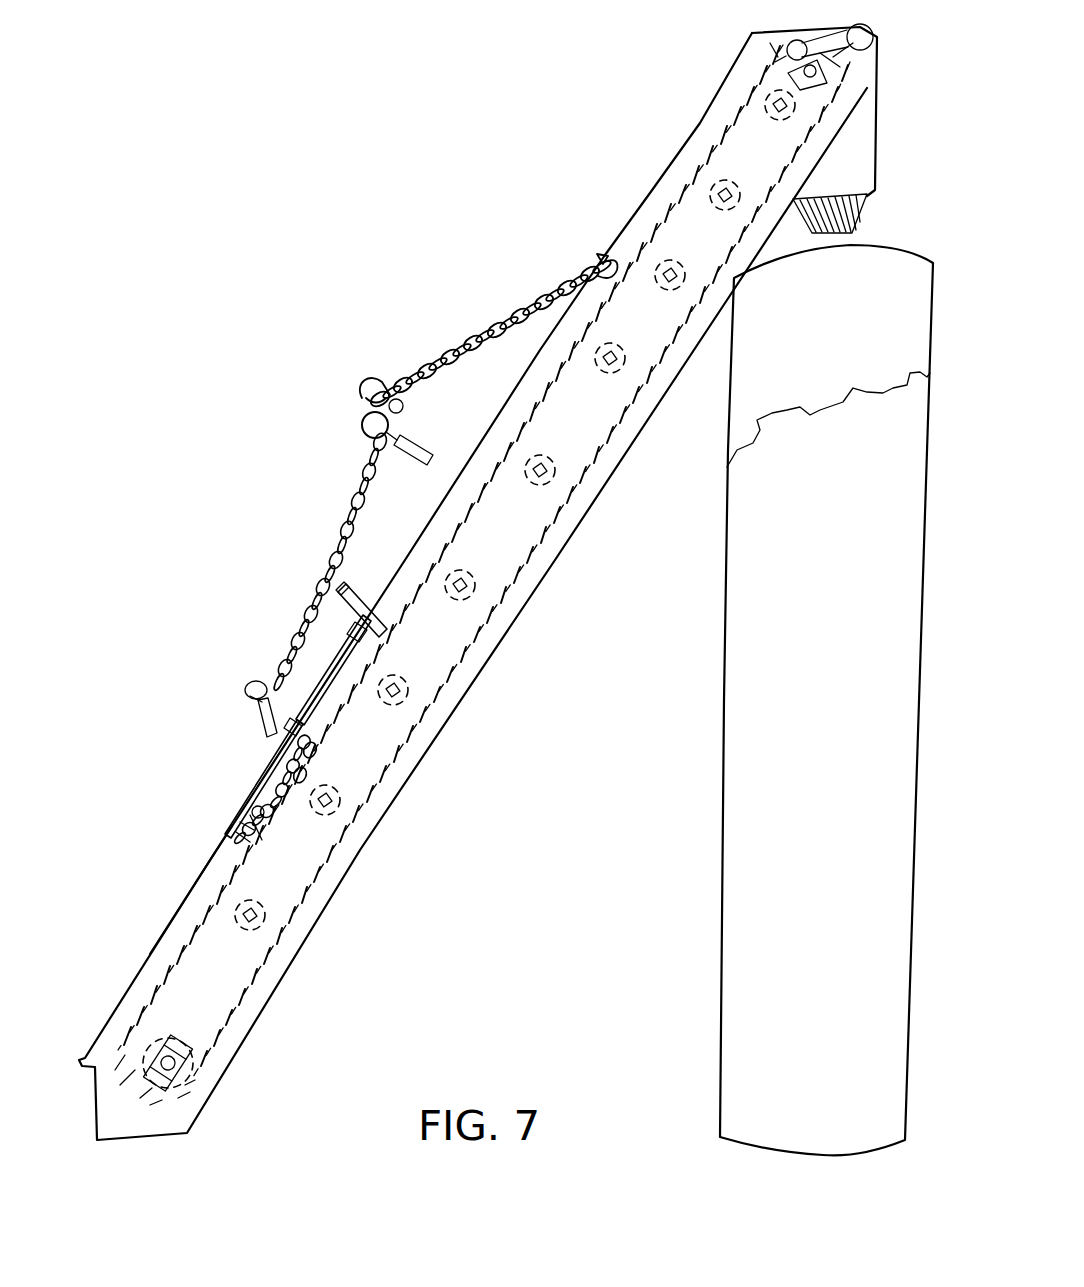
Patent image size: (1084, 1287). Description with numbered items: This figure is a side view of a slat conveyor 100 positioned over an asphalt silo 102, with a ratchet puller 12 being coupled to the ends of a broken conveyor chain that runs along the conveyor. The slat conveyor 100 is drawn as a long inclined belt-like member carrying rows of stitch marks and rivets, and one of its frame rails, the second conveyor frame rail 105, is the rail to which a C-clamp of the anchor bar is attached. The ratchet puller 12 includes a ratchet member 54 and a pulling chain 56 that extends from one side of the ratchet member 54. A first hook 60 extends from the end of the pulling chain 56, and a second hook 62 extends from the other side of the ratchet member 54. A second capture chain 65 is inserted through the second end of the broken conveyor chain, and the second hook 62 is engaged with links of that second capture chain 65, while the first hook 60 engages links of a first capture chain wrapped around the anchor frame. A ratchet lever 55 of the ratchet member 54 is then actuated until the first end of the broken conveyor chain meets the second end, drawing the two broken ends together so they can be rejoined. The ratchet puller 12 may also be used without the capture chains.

The ratchet puller 12 is at (356, 437).
The ratchet member 54 is at (404, 411).
The ratchet lever 55 is at (406, 468).
The pulling chain 56 is at (320, 583).
The first hook 60 is at (247, 680).
The second hook 62 is at (366, 378).
The second capture chain 65 is at (462, 348).
The slat conveyor 100 is at (538, 712).
The asphalt silo 102 is at (700, 826).
The second conveyor frame rail 105 is at (184, 895).